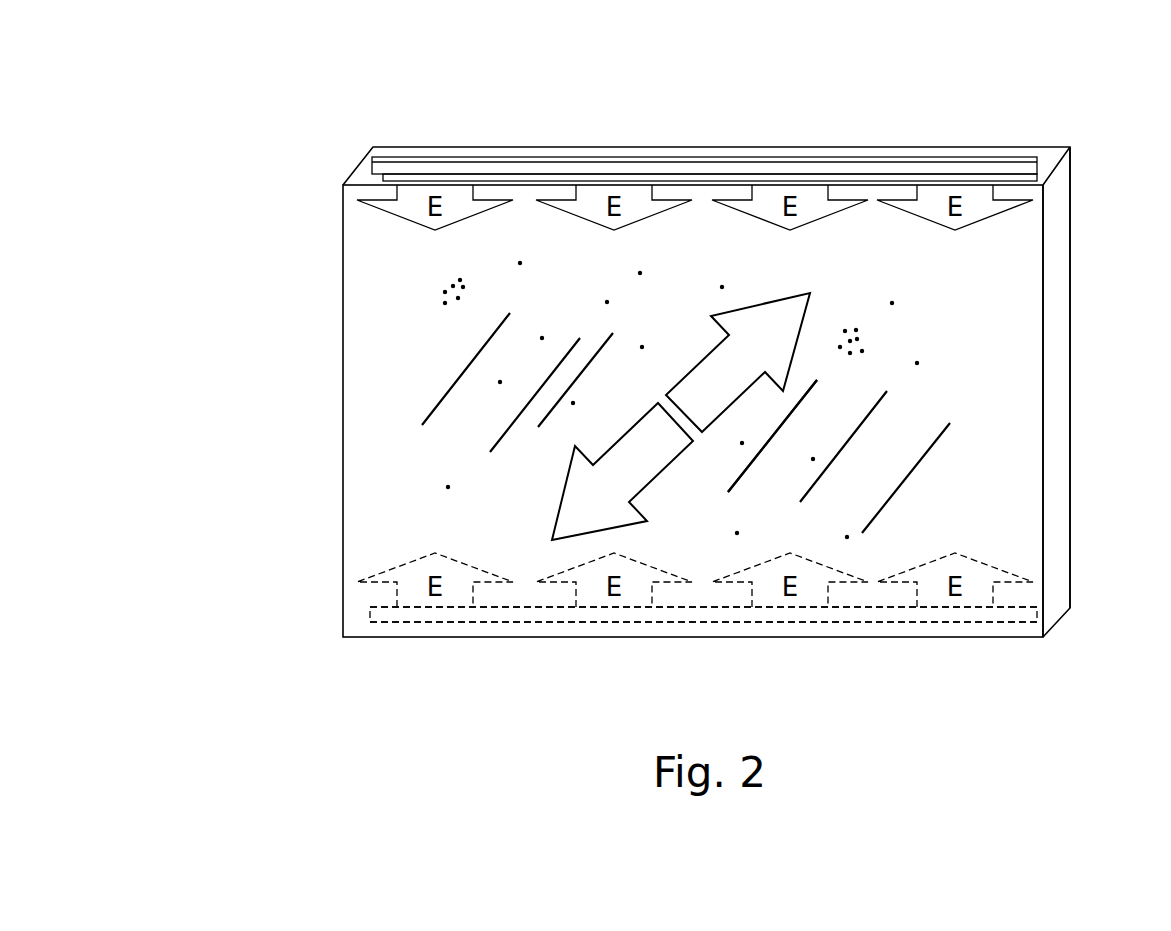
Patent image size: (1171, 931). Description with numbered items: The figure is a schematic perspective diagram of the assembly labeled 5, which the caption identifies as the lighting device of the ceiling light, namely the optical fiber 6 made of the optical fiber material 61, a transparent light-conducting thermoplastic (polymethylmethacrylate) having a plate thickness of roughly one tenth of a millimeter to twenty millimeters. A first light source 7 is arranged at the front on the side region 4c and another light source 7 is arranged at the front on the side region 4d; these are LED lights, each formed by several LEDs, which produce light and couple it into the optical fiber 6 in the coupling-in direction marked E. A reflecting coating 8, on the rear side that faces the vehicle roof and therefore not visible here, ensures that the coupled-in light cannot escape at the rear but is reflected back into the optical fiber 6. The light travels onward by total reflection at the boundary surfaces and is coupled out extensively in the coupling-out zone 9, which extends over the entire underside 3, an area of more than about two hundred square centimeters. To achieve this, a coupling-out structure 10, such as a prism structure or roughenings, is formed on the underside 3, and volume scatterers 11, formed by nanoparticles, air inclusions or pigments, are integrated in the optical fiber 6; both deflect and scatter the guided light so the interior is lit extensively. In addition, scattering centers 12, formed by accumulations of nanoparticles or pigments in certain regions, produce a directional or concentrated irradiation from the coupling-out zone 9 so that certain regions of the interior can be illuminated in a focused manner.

The device 5 is at (626, 366).
The optical fiber 6 is at (626, 366).
The optical fiber material 61 is at (298, 163).
The light source 7 is at (567, 151).
The side region 4c is at (750, 150).
The side region 4d is at (532, 650).
The reflecting coating 8 is at (1070, 368).
The underside 3 is at (813, 542).
The coupling-out zone 9 is at (828, 512).
The coupling-out structure 10 is at (812, 402).
The volume scatterers 11 is at (530, 337).
The scattering centers 12 is at (442, 293).